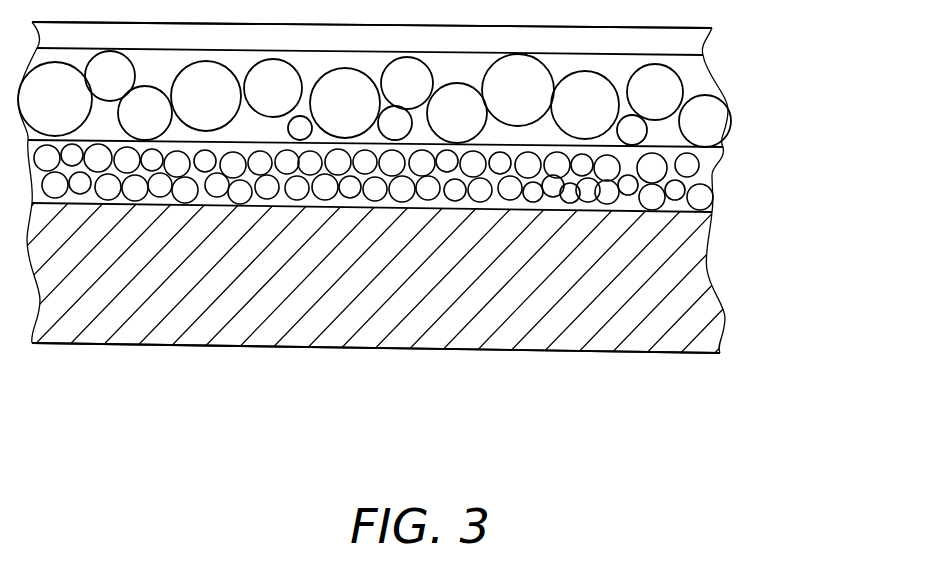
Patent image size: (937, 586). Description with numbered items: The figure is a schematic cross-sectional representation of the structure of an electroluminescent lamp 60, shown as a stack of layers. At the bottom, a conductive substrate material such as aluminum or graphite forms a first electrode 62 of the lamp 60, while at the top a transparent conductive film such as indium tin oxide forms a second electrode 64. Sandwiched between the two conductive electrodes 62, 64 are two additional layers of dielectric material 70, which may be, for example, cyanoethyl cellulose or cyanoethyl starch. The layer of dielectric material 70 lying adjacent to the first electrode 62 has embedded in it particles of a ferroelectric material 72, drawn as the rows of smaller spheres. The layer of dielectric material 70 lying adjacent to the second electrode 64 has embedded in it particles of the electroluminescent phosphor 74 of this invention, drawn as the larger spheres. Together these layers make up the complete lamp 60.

The electroluminescent lamp 60 is at (805, 13).
The first electrode 62 is at (695, 285).
The second electrode 64 is at (700, 44).
The dielectric material 70 is at (707, 80).
The ferroelectric material 72 is at (710, 198).
The electroluminescent phosphor 74 is at (715, 120).